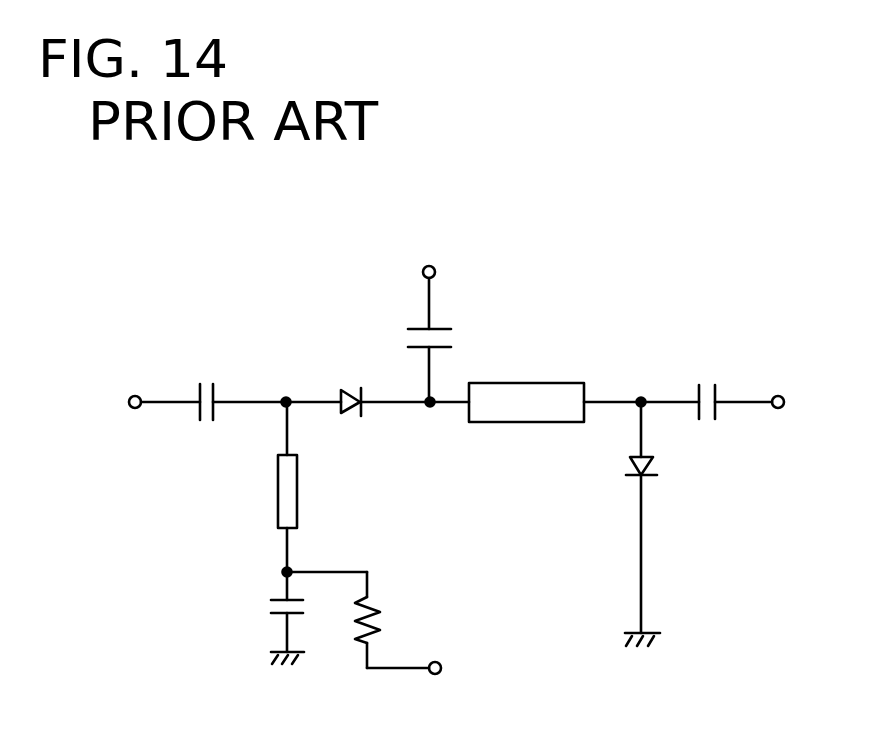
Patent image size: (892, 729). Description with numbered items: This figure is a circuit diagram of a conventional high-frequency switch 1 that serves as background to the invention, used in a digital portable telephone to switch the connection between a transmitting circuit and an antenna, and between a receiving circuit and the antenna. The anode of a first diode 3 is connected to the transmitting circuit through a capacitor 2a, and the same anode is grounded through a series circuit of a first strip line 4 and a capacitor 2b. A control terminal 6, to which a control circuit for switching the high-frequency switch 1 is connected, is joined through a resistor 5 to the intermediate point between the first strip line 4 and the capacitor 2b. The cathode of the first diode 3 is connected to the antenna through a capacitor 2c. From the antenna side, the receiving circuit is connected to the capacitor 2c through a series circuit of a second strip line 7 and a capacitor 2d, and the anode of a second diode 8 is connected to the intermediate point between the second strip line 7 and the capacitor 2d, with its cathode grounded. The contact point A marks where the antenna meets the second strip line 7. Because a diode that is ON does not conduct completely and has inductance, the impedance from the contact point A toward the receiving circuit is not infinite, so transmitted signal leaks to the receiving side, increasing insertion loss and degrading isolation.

The high-frequency switch 1 is at (188, 243).
The capacitor 2a is at (215, 393).
The capacitor 2b is at (282, 600).
The capacitor 2c is at (452, 327).
The capacitor 2d is at (698, 392).
The first diode 3 is at (348, 388).
The first strip line 4 is at (278, 478).
The resistor 5 is at (381, 622).
The control terminal 6 is at (442, 663).
The second strip line 7 is at (523, 423).
The second diode 8 is at (647, 478).
The contact point A is at (430, 414).